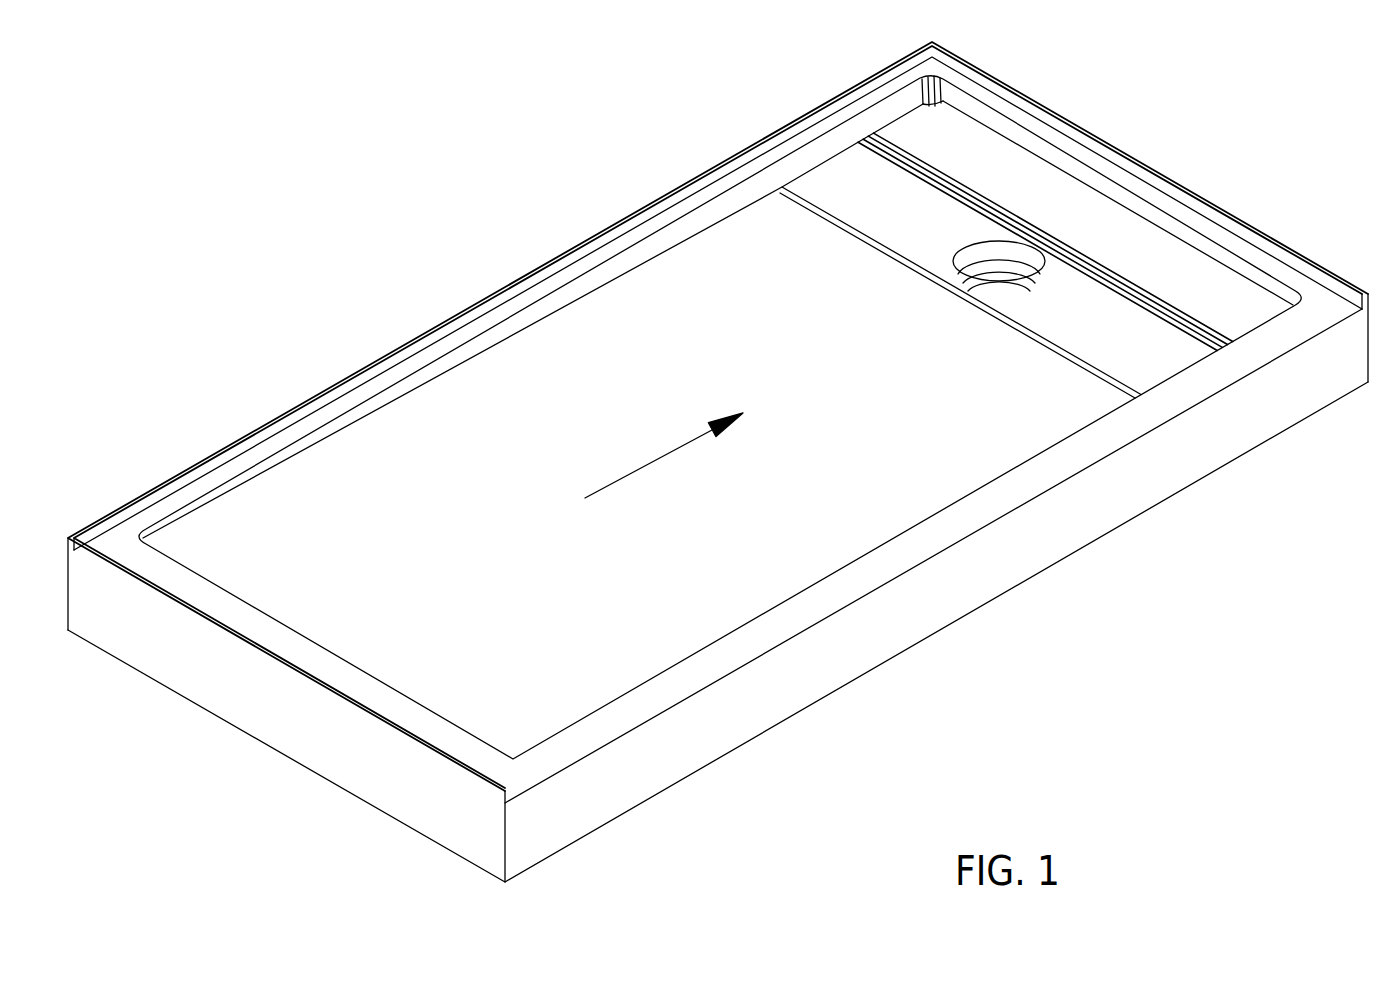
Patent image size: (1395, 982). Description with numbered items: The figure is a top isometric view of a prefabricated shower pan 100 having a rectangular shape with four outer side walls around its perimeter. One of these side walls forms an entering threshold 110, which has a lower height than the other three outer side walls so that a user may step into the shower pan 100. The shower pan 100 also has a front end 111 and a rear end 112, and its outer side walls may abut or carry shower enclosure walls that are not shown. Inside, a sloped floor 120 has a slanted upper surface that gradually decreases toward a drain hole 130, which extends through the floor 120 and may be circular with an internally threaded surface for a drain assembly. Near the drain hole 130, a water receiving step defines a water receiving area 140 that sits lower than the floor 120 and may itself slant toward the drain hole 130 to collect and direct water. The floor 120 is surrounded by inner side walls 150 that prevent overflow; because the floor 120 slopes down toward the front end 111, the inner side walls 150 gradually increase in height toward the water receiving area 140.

The shower pan 100 is at (178, 107).
The entering threshold 110 is at (1025, 510).
The front end 111 is at (1215, 206).
The rear end 112 is at (318, 670).
The sloped floor 120 is at (942, 140).
The drain hole 130 is at (990, 247).
The water receiving area 140 is at (1143, 333).
The inner side walls 150 is at (542, 313).